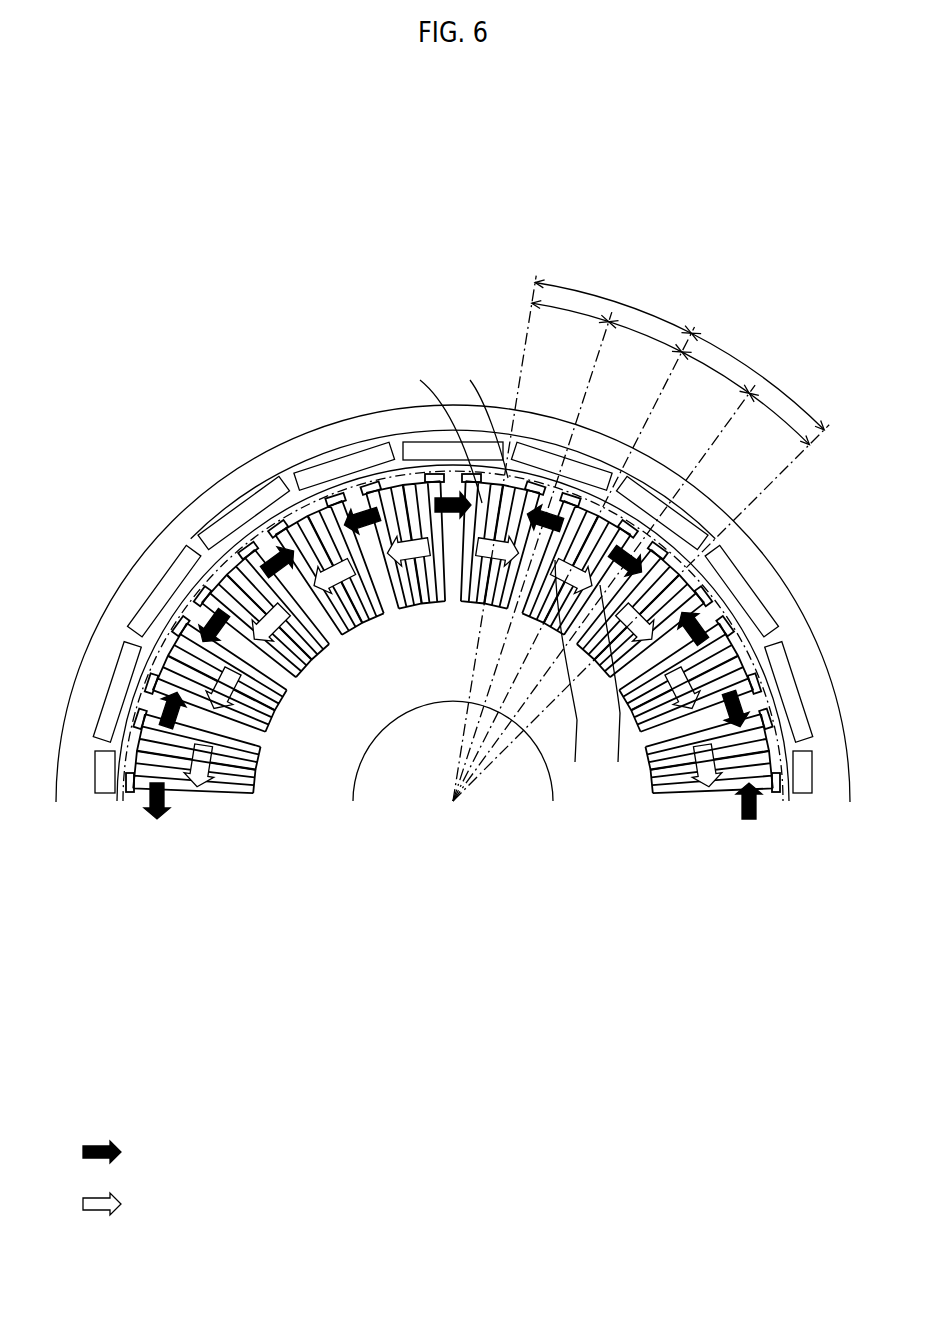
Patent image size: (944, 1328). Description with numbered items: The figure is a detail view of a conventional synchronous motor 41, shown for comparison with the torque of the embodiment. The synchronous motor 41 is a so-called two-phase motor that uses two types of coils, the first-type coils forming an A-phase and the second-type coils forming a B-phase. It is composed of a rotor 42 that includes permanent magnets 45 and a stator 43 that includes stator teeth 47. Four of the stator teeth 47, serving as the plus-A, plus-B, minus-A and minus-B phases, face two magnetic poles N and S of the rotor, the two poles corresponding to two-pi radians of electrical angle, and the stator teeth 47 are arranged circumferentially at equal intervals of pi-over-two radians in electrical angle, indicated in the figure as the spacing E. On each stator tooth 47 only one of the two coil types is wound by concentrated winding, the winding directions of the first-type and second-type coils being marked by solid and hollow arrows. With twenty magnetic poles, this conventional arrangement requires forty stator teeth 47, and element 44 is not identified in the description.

The synchronous motor 41 is at (468, 257).
The rotor 42 is at (218, 476).
The stator 43 is at (315, 750).
The yoke segment 44 is at (191, 540).
The permanent magnets 45 is at (557, 510).
The stator teeth 47 is at (688, 542).